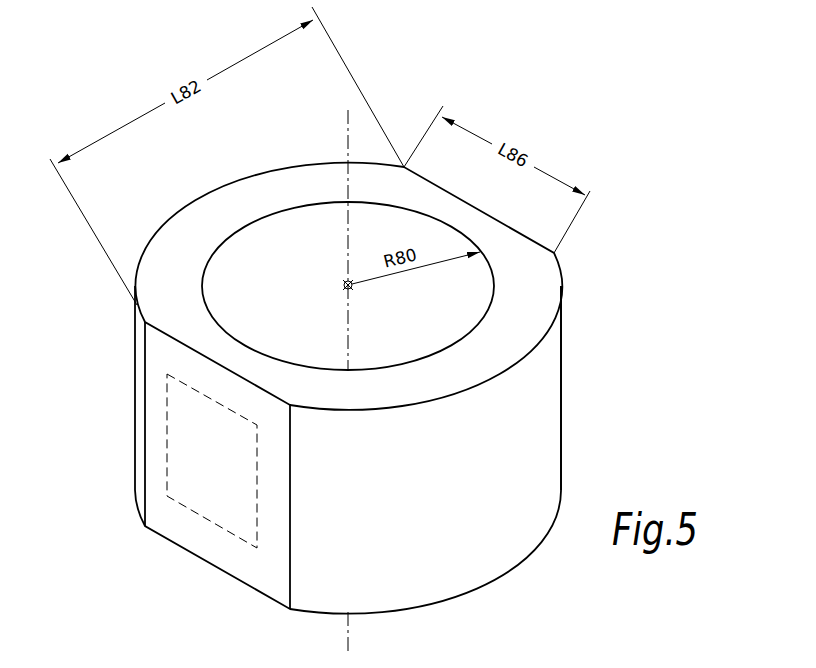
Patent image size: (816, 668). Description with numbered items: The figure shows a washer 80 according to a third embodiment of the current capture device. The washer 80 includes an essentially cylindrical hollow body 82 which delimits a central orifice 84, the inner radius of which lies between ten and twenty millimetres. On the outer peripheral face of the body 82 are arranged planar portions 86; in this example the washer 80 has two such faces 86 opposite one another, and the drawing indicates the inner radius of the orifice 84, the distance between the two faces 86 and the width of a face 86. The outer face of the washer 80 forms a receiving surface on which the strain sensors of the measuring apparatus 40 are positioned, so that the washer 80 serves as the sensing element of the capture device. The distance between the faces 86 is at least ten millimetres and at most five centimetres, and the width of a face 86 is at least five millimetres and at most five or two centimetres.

The washer 80 is at (601, 260).
The cylindrical hollow body 82 is at (520, 423).
The central orifice 84 is at (315, 275).
The planar portion 86 is at (272, 548).
The measuring apparatus 40 is at (177, 432).